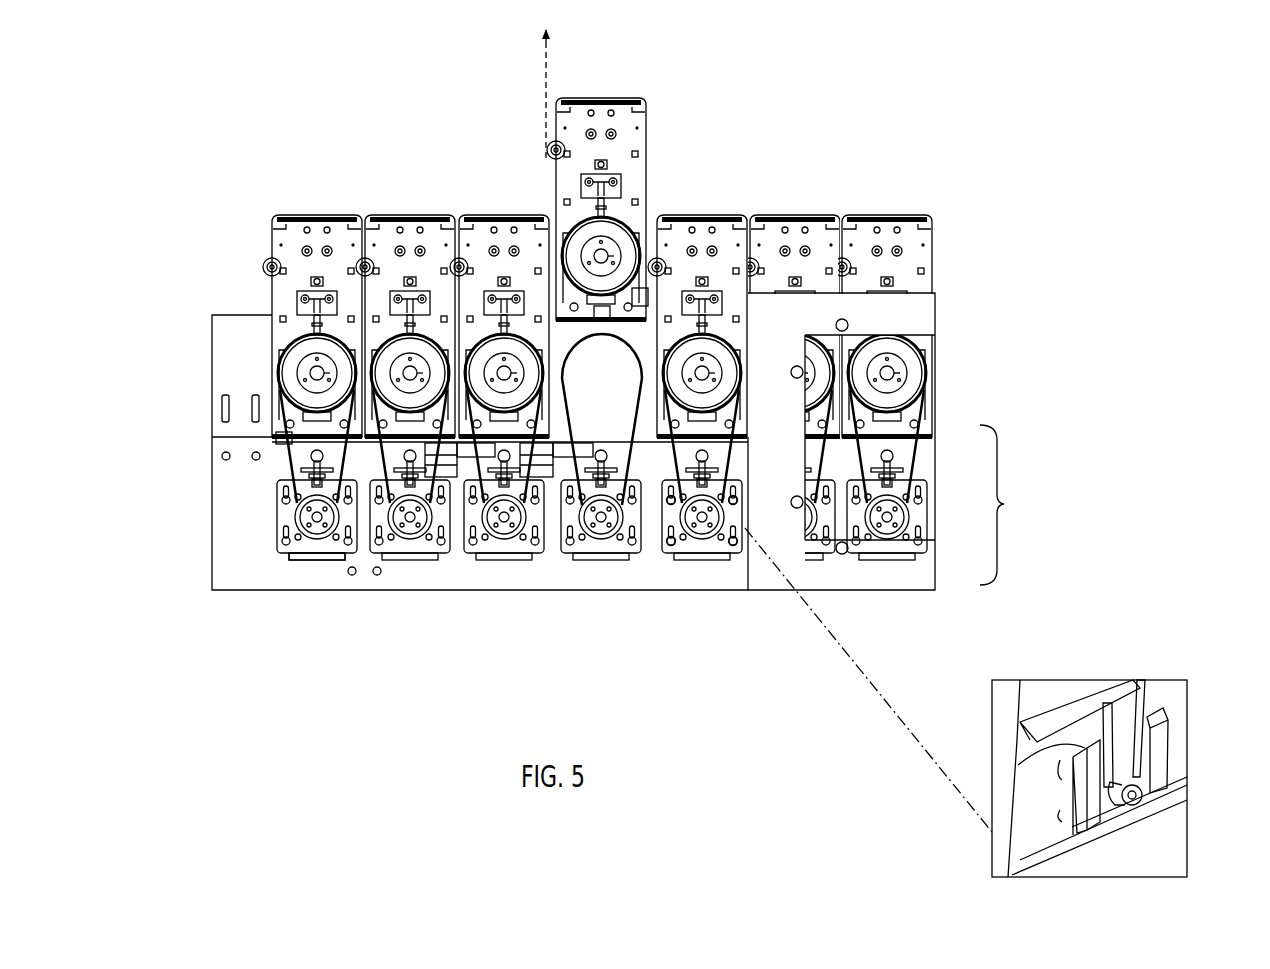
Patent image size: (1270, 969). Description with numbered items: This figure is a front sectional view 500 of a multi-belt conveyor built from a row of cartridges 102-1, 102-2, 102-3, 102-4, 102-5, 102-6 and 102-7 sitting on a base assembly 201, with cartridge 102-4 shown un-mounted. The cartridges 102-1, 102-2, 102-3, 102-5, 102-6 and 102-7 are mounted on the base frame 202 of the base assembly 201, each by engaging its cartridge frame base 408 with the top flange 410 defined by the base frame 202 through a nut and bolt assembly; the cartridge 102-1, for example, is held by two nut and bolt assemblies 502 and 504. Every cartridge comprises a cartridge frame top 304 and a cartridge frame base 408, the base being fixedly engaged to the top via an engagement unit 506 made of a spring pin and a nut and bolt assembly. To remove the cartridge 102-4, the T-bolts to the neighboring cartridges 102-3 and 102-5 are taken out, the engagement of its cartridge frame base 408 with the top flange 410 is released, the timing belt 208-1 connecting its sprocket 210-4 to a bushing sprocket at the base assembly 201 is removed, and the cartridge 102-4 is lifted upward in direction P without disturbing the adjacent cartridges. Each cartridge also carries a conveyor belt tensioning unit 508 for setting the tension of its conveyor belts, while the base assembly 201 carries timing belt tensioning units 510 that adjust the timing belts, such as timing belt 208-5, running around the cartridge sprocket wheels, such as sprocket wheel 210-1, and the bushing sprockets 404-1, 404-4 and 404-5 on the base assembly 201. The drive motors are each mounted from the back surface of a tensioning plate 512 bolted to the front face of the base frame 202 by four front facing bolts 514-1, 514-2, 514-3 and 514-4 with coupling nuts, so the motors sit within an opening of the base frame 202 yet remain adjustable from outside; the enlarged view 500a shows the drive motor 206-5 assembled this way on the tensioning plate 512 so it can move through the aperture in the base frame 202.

The front sectional view 500 is at (241, 157).
The enlarged view 500a is at (997, 659).
The cartridge 102-1 is at (318, 211).
The cartridge 102-2 is at (424, 211).
The cartridge 102-3 is at (518, 211).
The cartridge 102-4 is at (620, 96).
The cartridge 102-5 is at (723, 211).
The cartridge 102-6 is at (815, 211).
The cartridge 102-7 is at (890, 211).
The base assembly 201 is at (1013, 505).
The base frame 202 is at (226, 541).
The drive motor 206-5 is at (1092, 745).
The timing belt 208-1 is at (647, 386).
The timing belt 208-5 is at (1137, 727).
The sprocket wheel 210-1 is at (286, 351).
The sprocket 210-4 is at (610, 238).
The cartridge frame top 304 is at (641, 118).
The sprocket 404-1 is at (305, 531).
The sprocket 404-4 is at (597, 530).
The sprocket 404-5 is at (1143, 793).
The cartridge frame base 408 is at (604, 322).
The top flange 410 is at (583, 433).
The nut and bolt assembly 502 is at (281, 440).
The nut and bolt assembly 504 is at (330, 441).
The engagement unit 506 is at (648, 296).
The conveyor belt tensioning unit 508 is at (300, 303).
The timing belt tensioning unit 510 is at (330, 541).
The tensioning plate 512 is at (734, 508).
The front facing bolt 514-1 is at (673, 504).
The front facing bolt 514-2 is at (674, 545).
The front facing bolt 514-3 is at (736, 545).
The front facing bolt 514-4 is at (736, 497).
The direction P is at (536, 89).